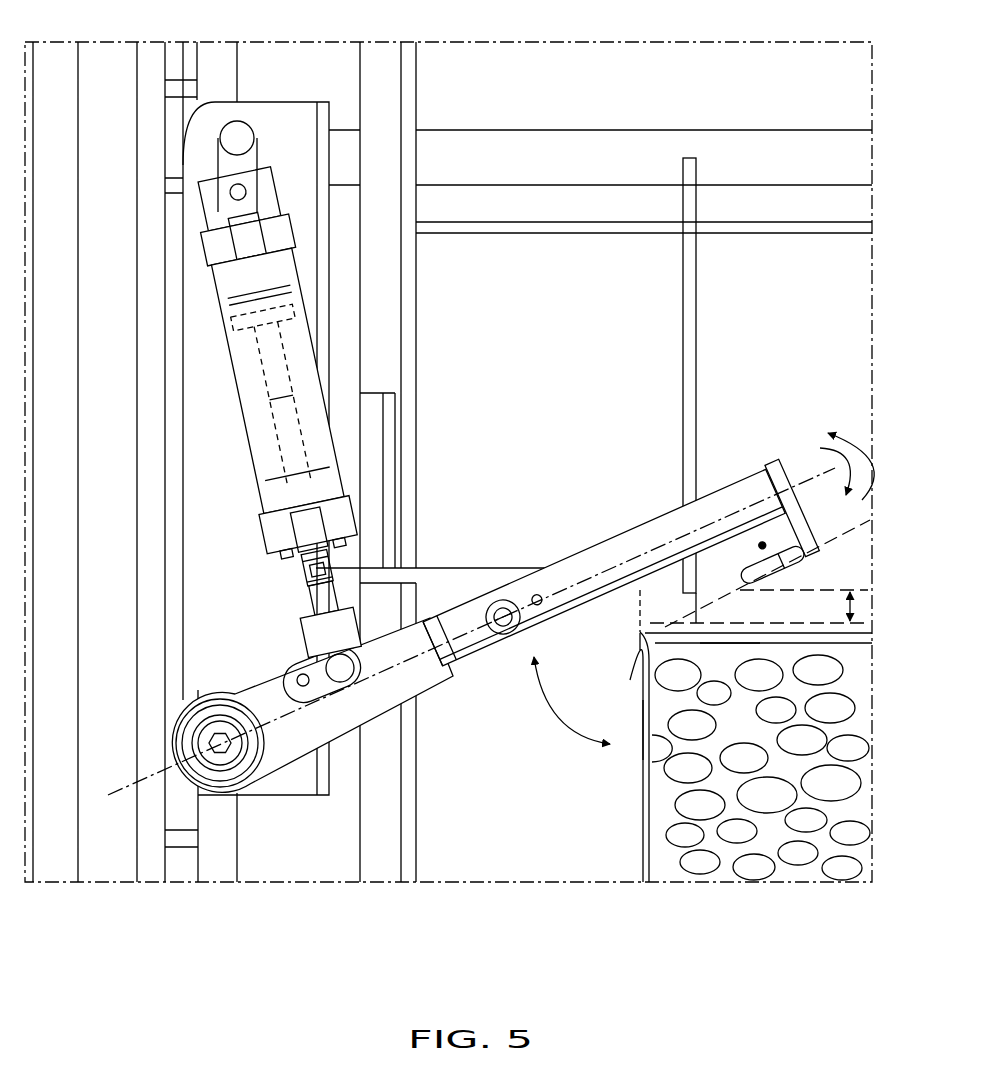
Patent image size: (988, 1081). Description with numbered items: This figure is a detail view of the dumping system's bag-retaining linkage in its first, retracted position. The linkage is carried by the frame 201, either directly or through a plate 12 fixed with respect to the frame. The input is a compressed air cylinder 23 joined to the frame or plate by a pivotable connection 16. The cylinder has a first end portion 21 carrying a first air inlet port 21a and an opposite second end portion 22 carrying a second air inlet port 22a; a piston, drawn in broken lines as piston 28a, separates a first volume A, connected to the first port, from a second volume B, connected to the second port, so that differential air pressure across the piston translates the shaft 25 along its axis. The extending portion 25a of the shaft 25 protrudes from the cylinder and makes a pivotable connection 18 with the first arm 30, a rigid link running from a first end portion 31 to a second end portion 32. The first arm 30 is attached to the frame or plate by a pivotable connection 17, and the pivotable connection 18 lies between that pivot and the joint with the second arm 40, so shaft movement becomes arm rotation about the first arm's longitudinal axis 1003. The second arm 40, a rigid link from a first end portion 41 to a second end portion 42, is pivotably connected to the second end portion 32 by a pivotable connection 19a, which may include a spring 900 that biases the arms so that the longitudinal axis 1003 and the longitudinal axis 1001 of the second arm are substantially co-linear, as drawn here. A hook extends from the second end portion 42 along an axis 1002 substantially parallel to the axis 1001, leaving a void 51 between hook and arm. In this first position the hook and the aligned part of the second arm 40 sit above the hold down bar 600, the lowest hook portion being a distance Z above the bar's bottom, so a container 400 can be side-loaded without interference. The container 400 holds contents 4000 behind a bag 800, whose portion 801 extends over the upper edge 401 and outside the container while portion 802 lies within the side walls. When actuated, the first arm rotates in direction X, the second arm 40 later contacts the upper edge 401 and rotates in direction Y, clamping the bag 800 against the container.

The frame 201 is at (217, 73).
The pivotable connection 16 is at (239, 190).
The first end portion 21 is at (222, 247).
The first air inlet port 21a is at (253, 242).
The first volume A is at (230, 283).
The piston 28a is at (292, 316).
The air cylinder 23 is at (243, 373).
The second volume B is at (253, 425).
The plate 12 is at (197, 471).
The shaft 25 is at (292, 425).
The second end portion 22 is at (307, 550).
The second air inlet port 22a is at (318, 577).
The extending portion 25a is at (318, 602).
The hold down bar 600 is at (457, 575).
The second end portion 32 is at (487, 612).
The spring 900 is at (536, 594).
The first end portion 41 is at (453, 623).
The second arm 40 is at (608, 547).
The void 51 is at (760, 545).
The second end portion 42 is at (747, 483).
The longitudinal axis 1001 is at (806, 478).
The direction Y is at (850, 452).
The direction X is at (826, 465).
The axis 1002 is at (855, 532).
The distance Z is at (852, 607).
The upper edge 401 is at (645, 640).
The bag outer portion 801 is at (641, 660).
The pivotable connection 19a is at (510, 632).
The bag inner portion 802 is at (648, 783).
The bag 800 is at (651, 830).
The container 400 is at (737, 850).
The contents 4000 is at (847, 785).
The first arm 30 is at (375, 702).
The pivotable connection 18 is at (340, 675).
The pivotable connection 17 is at (222, 752).
The first end portion 31 is at (245, 791).
The longitudinal axis 1003 is at (112, 792).